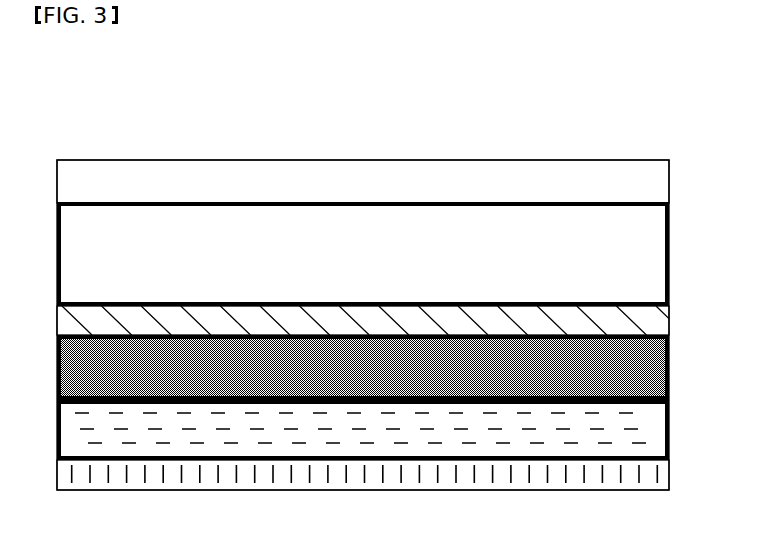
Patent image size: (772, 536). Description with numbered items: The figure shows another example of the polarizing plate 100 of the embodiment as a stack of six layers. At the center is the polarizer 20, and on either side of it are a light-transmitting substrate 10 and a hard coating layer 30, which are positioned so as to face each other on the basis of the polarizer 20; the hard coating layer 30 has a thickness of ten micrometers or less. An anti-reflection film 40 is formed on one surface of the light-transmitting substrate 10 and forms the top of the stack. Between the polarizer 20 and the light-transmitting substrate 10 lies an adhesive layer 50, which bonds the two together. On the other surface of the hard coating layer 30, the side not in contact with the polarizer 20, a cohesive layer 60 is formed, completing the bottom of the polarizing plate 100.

The polarizing plate 100 is at (660, 127).
The anti-reflection film 40 is at (653, 183).
The light-transmitting substrate 10 is at (657, 256).
The adhesive layer 50 is at (660, 320).
The polarizer 20 is at (657, 371).
The hard coating layer 30 is at (660, 426).
The cohesive layer 60 is at (665, 475).